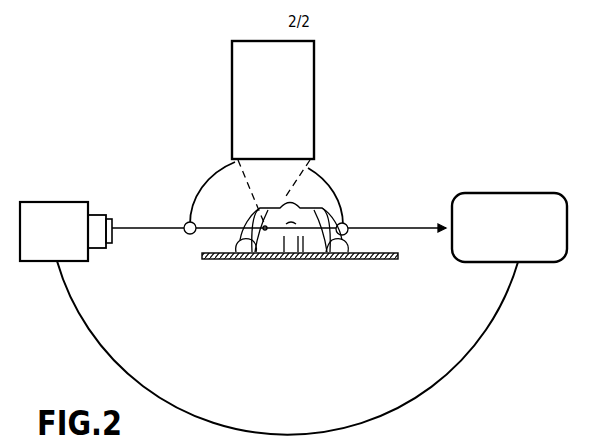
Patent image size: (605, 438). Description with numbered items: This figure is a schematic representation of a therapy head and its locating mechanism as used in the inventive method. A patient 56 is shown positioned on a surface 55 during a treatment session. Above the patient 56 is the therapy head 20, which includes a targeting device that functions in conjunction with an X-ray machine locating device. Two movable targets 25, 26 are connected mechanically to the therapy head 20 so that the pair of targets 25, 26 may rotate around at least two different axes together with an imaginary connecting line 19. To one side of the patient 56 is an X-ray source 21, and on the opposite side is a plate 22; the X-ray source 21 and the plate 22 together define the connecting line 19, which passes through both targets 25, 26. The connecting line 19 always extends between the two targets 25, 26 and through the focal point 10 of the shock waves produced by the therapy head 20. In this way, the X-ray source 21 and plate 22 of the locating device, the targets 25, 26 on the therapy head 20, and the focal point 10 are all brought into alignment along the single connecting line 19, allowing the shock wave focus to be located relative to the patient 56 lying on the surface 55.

The focal point 10 is at (272, 243).
The connecting line 19 is at (403, 228).
The therapy head 20 is at (253, 41).
The X-ray source 21 is at (68, 202).
The plate 22 is at (528, 193).
The movable target 25 is at (187, 222).
The movable target 26 is at (347, 224).
The surface 55 is at (215, 259).
The patient 56 is at (300, 248).